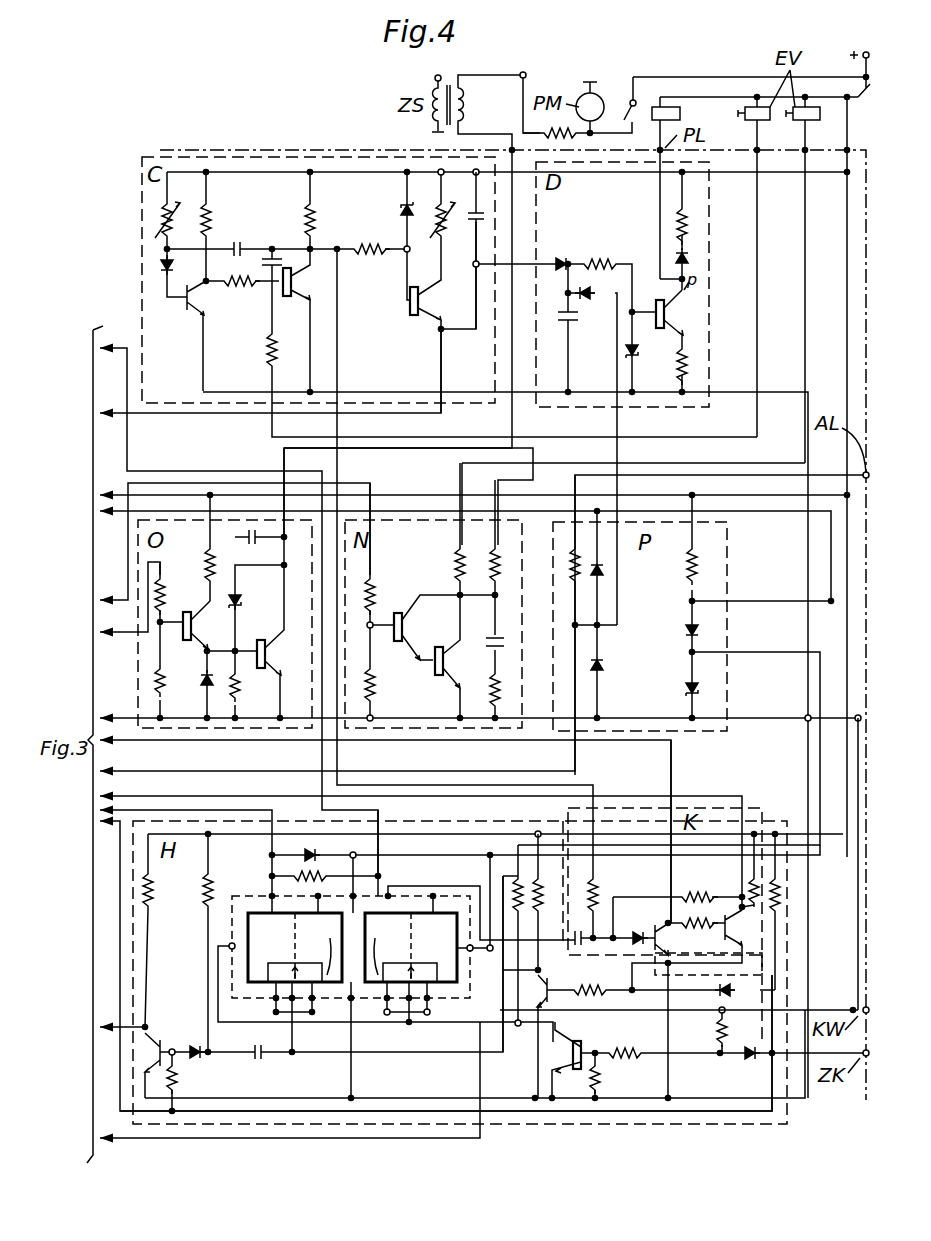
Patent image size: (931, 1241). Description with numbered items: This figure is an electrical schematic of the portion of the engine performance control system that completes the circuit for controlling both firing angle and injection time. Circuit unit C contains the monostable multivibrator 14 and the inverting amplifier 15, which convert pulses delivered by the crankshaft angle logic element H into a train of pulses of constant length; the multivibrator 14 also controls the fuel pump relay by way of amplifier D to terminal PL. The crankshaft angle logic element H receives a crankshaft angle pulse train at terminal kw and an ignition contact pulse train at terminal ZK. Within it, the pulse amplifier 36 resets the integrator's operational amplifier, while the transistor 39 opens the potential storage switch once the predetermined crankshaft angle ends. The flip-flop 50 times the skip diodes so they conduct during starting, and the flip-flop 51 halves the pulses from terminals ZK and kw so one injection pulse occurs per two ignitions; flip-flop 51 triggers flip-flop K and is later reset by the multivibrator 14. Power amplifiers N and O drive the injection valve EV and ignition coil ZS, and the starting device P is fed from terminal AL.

The monostable multivibrator 14 is at (277, 222).
The inverting amplifier 15 is at (427, 213).
The pulse amplifier 36 is at (160, 1045).
The transistor 39 is at (552, 981).
The flip-flop 50 is at (295, 981).
The flip-flop 51 is at (411, 981).